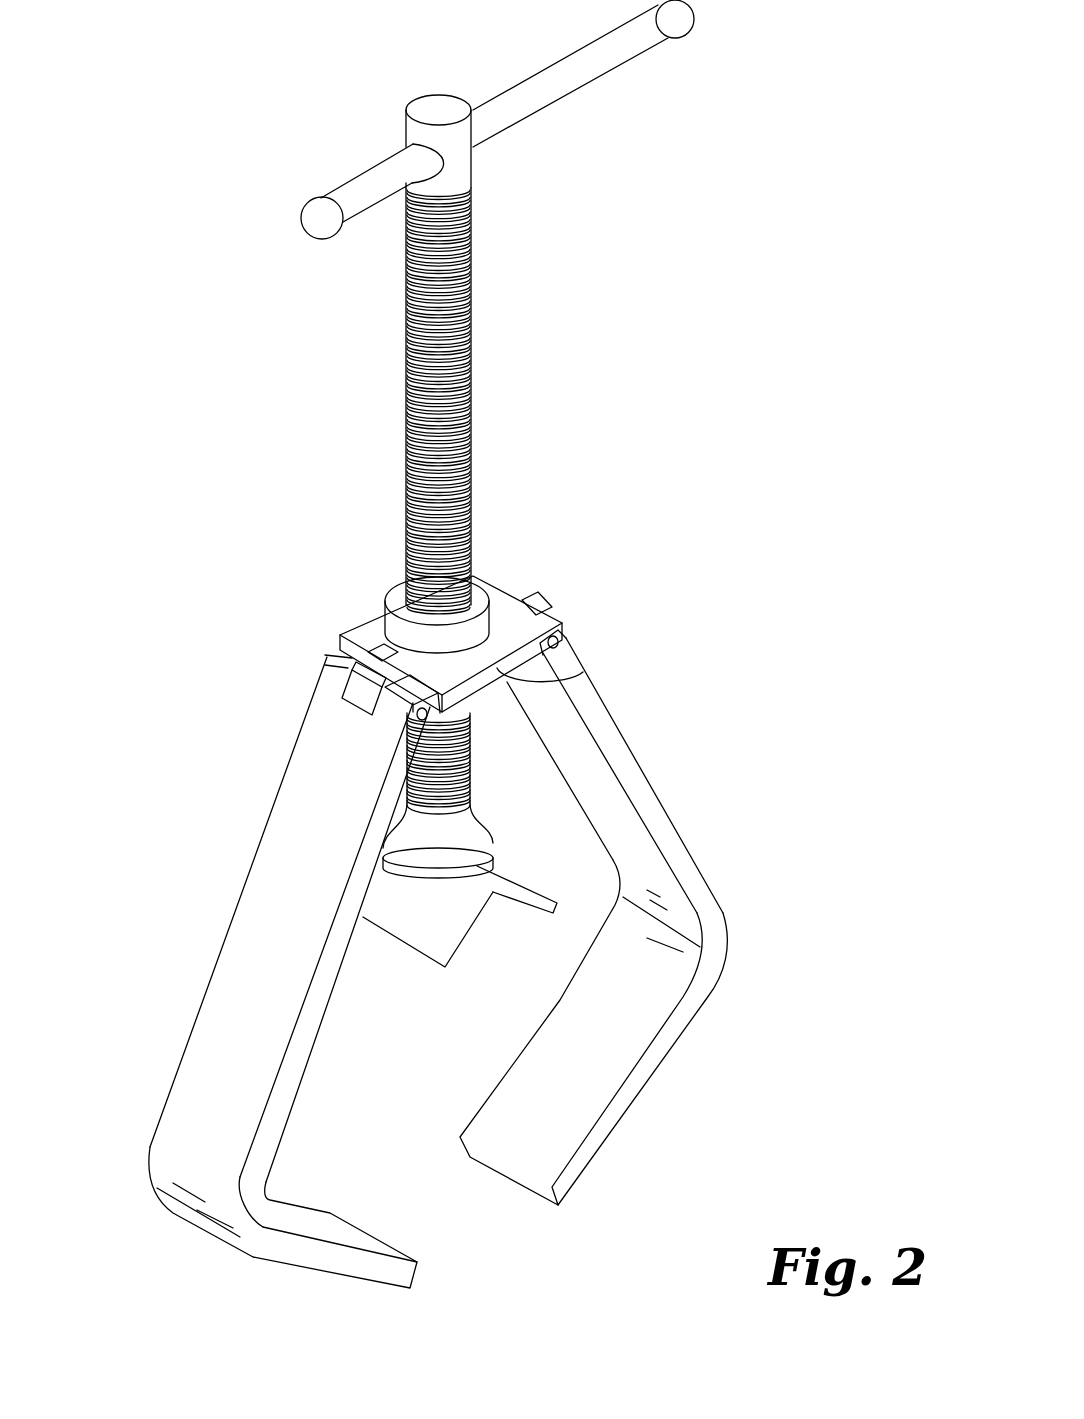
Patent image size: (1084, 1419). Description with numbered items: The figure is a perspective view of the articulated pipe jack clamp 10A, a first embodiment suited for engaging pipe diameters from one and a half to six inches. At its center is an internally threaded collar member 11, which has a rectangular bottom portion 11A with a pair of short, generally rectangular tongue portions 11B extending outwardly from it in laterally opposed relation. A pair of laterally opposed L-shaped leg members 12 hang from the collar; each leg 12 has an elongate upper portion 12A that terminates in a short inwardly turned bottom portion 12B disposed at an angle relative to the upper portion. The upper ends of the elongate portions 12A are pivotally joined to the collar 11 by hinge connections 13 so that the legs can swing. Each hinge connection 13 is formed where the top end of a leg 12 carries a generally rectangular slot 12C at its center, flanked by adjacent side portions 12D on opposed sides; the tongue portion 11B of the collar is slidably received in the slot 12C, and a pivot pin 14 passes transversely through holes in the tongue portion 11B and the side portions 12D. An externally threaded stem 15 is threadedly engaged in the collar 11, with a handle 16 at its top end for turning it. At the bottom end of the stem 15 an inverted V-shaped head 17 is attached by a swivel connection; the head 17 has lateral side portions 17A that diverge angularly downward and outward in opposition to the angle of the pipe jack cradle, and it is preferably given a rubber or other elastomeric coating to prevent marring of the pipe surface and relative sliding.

The articulated pipe jack clamp 10A is at (677, 438).
The collar member 11 is at (385, 624).
The rectangular bottom portion 11A is at (572, 672).
The tongue portion 11B is at (518, 592).
The leg member 12 is at (668, 802).
The elongate upper portion 12A is at (640, 755).
The inwardly turned bottom portion 12B is at (640, 1085).
The slot 12C is at (340, 712).
The side portion 12D is at (499, 572).
The hinge connection 13 is at (545, 599).
The pivot pin 14 is at (560, 642).
The externally threaded stem 15 is at (470, 368).
The handle 16 is at (568, 64).
The inverted V-shaped head 17 is at (425, 942).
The lateral side portion 17A is at (550, 907).